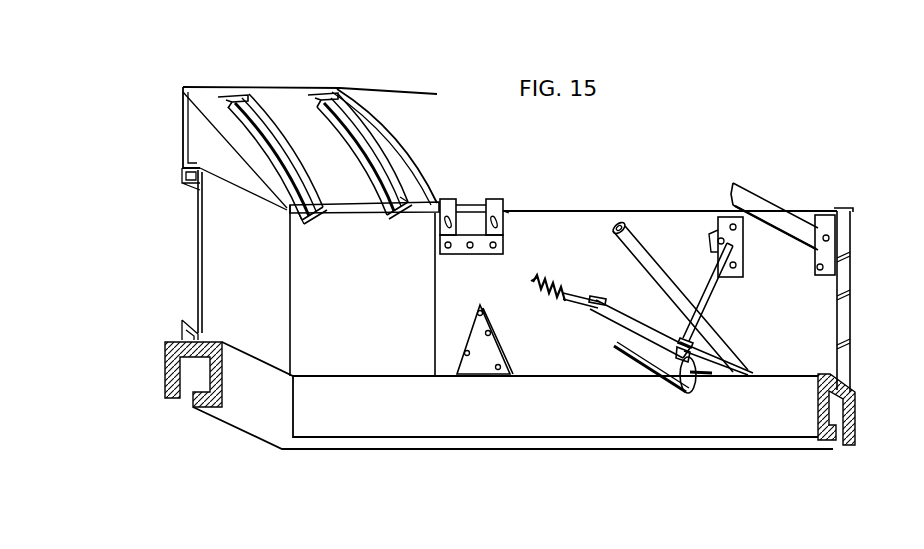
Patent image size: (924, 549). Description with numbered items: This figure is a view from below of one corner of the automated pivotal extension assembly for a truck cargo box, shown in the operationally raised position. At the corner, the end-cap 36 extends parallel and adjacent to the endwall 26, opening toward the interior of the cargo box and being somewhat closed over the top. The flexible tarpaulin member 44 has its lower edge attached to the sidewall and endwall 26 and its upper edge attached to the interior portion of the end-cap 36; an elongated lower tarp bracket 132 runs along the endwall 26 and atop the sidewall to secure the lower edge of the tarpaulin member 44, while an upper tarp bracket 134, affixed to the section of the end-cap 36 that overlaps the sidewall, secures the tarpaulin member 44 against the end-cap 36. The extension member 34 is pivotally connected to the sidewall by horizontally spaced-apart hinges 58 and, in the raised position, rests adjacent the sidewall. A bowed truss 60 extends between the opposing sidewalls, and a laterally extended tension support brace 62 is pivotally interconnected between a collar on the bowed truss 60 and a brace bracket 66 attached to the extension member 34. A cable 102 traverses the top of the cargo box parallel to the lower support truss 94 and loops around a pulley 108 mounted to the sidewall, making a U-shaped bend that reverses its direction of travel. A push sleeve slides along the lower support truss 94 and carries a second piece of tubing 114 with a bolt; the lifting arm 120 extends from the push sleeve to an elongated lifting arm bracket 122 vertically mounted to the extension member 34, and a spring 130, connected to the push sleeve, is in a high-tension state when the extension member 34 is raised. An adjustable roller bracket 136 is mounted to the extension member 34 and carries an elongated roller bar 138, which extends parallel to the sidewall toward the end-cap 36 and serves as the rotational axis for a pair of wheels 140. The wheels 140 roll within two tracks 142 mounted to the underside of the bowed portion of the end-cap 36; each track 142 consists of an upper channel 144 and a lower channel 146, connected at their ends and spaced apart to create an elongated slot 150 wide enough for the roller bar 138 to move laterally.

The endwall 26 is at (248, 403).
The extension member 34 is at (855, 297).
The end-cap 36 is at (182, 98).
The tarpaulin member 44 is at (198, 238).
The hinge 58 is at (478, 375).
The bowed truss 60 is at (647, 240).
The tension support brace 62 is at (772, 200).
The brace bracket 66 is at (825, 217).
The lower support truss 94 is at (712, 362).
The cable 102 is at (630, 365).
The pulley 108 is at (697, 387).
The second piece of tubing 114 is at (602, 295).
The lifting arm 120 is at (713, 247).
The lifting arm bracket 122 is at (720, 213).
The spring 130 is at (547, 287).
The lower tarp bracket 132 is at (178, 332).
The upper tarp bracket 134 is at (183, 172).
The roller bracket 136 is at (505, 207).
The roller bar 138 is at (352, 213).
The wheel 140 is at (298, 212).
The track 142 is at (232, 100).
The upper channel 144 is at (247, 103).
The lower channel 146 is at (243, 138).
The slot 150 is at (367, 147).